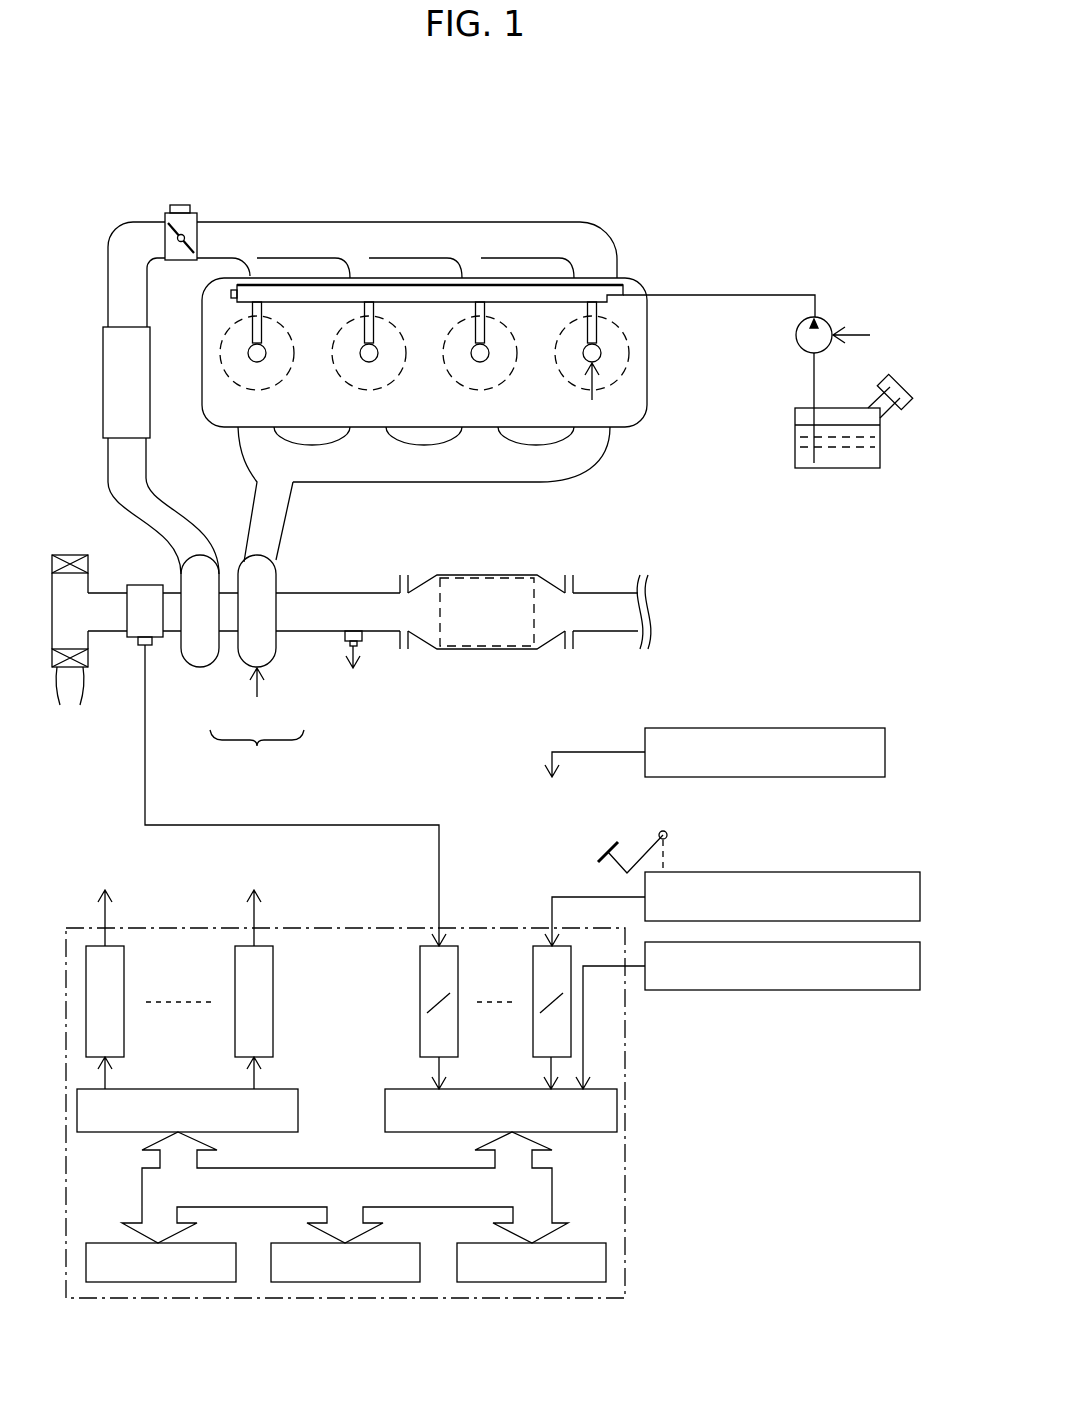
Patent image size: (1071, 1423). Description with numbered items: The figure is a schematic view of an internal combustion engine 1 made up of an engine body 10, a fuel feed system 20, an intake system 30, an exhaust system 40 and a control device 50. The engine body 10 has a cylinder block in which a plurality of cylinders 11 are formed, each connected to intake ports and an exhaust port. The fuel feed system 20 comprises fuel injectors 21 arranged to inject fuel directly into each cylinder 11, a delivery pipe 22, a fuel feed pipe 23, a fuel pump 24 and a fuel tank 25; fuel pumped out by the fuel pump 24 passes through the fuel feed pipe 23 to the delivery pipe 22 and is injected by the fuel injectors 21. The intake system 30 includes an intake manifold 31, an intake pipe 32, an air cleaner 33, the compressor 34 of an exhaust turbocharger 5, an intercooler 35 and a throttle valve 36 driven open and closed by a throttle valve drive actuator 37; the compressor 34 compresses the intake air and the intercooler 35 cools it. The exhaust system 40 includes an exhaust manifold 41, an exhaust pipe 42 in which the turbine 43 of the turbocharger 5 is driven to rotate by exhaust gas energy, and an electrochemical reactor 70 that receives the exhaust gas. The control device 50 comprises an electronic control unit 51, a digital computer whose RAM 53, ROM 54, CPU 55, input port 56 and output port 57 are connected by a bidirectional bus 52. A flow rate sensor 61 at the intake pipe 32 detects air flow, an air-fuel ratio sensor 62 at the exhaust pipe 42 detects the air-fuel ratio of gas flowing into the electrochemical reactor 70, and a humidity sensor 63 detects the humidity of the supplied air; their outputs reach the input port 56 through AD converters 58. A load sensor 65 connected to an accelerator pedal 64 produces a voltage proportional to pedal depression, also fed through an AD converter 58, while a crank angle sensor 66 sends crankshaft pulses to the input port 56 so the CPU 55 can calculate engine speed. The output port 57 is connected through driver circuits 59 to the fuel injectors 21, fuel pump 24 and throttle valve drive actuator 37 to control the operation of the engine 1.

The internal combustion engine 1 is at (845, 115).
The exhaust turbocharger 5 is at (257, 753).
The engine body 10 is at (635, 280).
The cylinder 11 is at (622, 380).
The fuel feed system 20 is at (792, 272).
The fuel injector 21 is at (580, 352).
The delivery pipe 22 is at (592, 284).
The fuel feed pipe 23 is at (731, 295).
The fuel pump 24 is at (829, 320).
The fuel tank 25 is at (836, 470).
The intake system 30 is at (58, 278).
The intake manifold 31 is at (487, 222).
The intake pipe 32 is at (102, 567).
The air cleaner 33 is at (92, 655).
The compressor 34 is at (205, 657).
The intercooler 35 is at (104, 348).
The throttle valve 36 is at (198, 222).
The throttle valve drive actuator 37 is at (163, 217).
The exhaust system 40 is at (550, 516).
The exhaust manifold 41 is at (400, 482).
The exhaust pipe 42 is at (330, 593).
The turbine 43 is at (268, 657).
The control device 50 is at (750, 1180).
The electronic control unit (ECU) 51 is at (300, 925).
The bidirectional bus 52 is at (552, 1195).
The RAM (random access memory) 53 is at (172, 1282).
The ROM (read only memory) 54 is at (340, 1282).
The CPU (microprocessor) 55 is at (535, 1282).
The input port 56 is at (400, 1089).
The output port 57 is at (288, 1089).
The AD converter 58 is at (533, 967).
The driver circuit 59 is at (235, 957).
The flow rate sensor (air-flow meter) 61 is at (135, 585).
The air-fuel ratio sensor 62 is at (357, 648).
The humidity sensor 63 is at (886, 752).
The accelerator pedal 64 is at (637, 845).
The load sensor 65 is at (848, 872).
The crank angle sensor 66 is at (873, 992).
The electrochemical reactor 70 is at (485, 650).